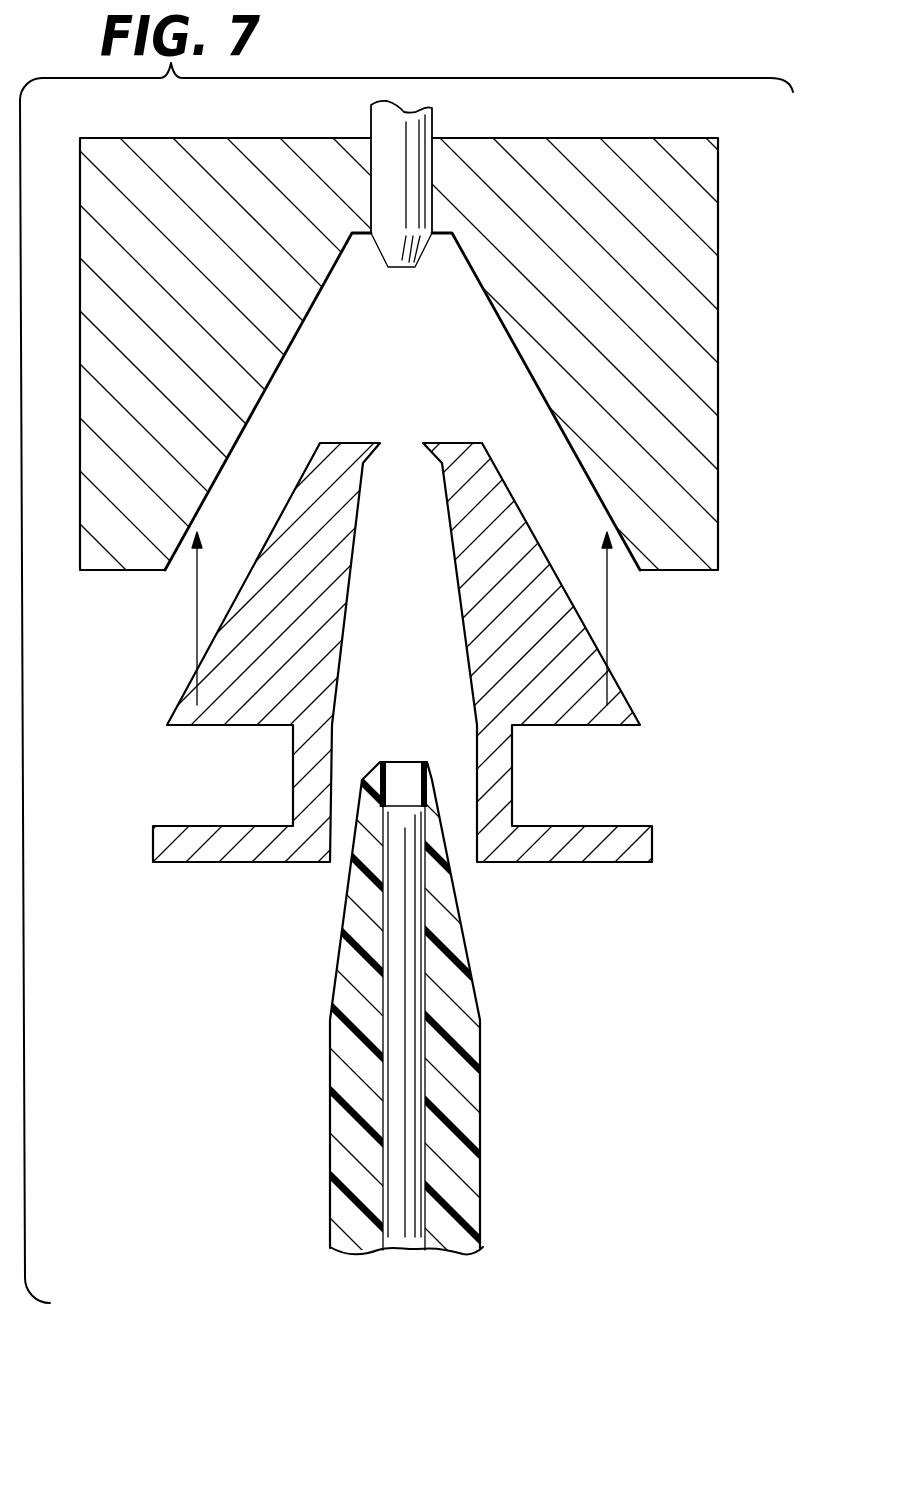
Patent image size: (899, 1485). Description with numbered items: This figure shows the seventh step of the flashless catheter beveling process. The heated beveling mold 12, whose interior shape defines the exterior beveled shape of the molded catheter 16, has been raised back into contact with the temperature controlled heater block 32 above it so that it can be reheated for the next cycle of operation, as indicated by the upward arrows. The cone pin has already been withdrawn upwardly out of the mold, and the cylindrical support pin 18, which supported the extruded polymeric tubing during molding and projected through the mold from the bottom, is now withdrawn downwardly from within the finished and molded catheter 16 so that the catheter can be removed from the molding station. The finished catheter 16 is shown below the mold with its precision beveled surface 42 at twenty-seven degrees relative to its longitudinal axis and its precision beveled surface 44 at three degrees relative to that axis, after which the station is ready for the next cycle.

The temperature controlled heater block 32 is at (720, 325).
The beveling mold 12 is at (646, 699).
The precision beveled surface 42 is at (428, 760).
The precision beveled surface 44 is at (340, 957).
The molded catheter 16 is at (483, 1082).
The support pin 18 is at (408, 1240).